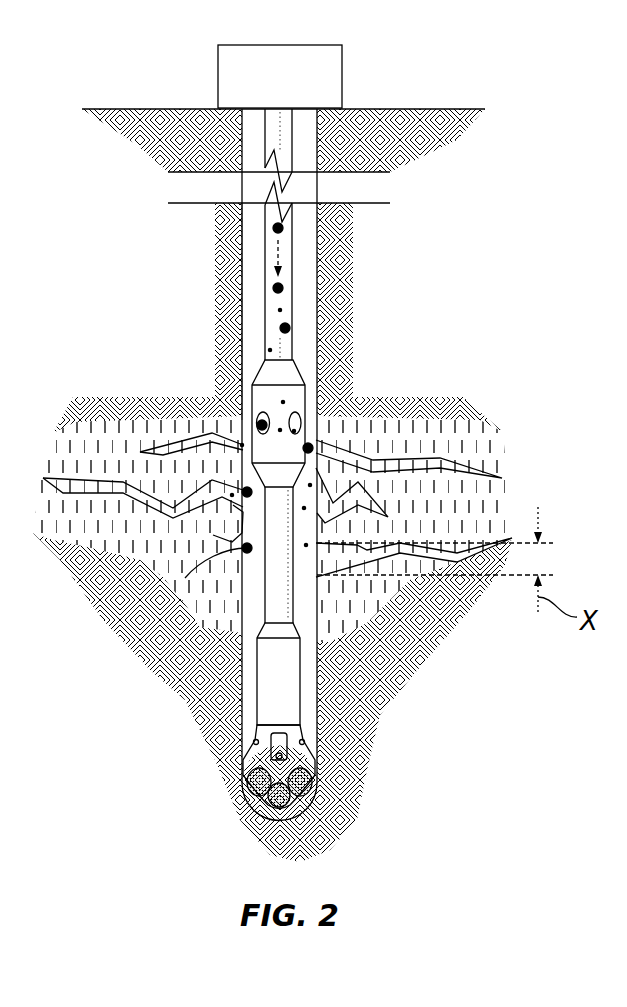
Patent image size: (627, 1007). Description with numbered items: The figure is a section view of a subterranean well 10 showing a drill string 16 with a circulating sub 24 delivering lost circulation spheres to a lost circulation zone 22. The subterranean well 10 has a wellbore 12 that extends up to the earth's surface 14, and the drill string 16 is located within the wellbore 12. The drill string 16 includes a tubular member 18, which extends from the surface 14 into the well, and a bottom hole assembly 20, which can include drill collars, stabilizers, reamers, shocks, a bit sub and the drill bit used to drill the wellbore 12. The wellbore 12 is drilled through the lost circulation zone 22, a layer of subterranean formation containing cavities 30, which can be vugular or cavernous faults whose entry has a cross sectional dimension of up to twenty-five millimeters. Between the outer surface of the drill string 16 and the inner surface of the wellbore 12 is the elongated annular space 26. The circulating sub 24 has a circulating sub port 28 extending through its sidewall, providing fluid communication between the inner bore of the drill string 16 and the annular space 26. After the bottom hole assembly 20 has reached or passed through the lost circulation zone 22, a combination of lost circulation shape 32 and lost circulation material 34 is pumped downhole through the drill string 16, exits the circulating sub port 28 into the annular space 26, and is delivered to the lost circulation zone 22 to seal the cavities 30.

The subterranean well 10 is at (434, 360).
The wellbore 12 is at (246, 357).
The earth's surface 14 is at (425, 109).
The drill string 16 is at (313, 265).
The tubular member 18 is at (268, 283).
The bottom hole assembly 20 is at (250, 760).
The lost circulation zone 22 is at (107, 464).
The circulating sub 24 is at (305, 378).
The annular space 26 is at (253, 297).
The circulating sub port 28 is at (299, 424).
The cavity 30 is at (233, 505).
The lost circulation shape 32 is at (212, 535).
The lost circulation material 34 is at (282, 310).